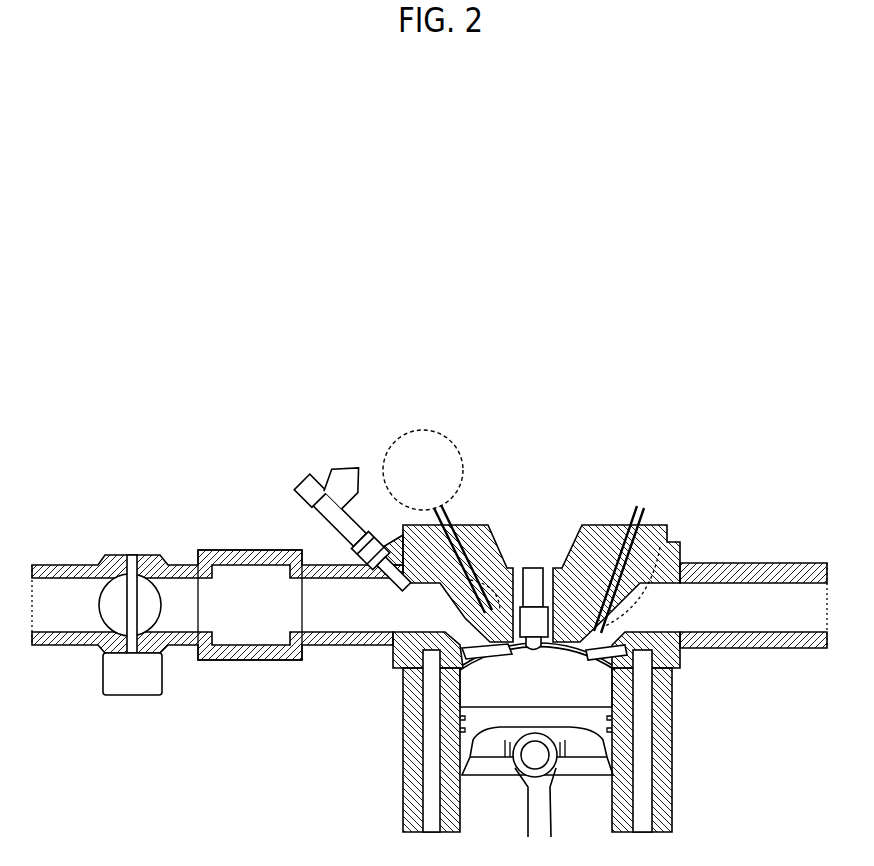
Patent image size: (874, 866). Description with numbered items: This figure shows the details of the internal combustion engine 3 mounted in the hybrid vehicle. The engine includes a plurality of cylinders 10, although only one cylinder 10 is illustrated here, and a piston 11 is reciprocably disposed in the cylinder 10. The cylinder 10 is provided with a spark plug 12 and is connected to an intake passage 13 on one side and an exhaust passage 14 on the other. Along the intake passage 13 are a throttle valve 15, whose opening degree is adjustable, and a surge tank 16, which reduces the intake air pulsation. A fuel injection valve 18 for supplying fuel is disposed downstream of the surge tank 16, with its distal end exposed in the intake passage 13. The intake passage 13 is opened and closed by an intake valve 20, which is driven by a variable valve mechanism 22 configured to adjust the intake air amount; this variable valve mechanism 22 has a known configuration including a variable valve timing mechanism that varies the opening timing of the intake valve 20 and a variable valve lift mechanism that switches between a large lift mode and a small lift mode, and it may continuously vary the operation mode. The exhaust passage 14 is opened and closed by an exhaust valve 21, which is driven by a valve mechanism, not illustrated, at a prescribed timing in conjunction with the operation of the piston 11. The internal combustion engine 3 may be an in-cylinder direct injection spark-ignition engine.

The internal combustion engine 3 is at (500, 398).
The cylinder 10 is at (587, 692).
The piston 11 is at (587, 742).
The spark plug 12 is at (535, 578).
The intake passage 13 is at (180, 558).
The exhaust passage 14 is at (747, 563).
The throttle valve 15 is at (107, 558).
The surge tank 16 is at (262, 575).
The fuel injection valve 18 is at (307, 490).
The intake valve 20 is at (507, 565).
The exhaust valve 21 is at (665, 530).
The variable valve mechanism 22 is at (418, 430).